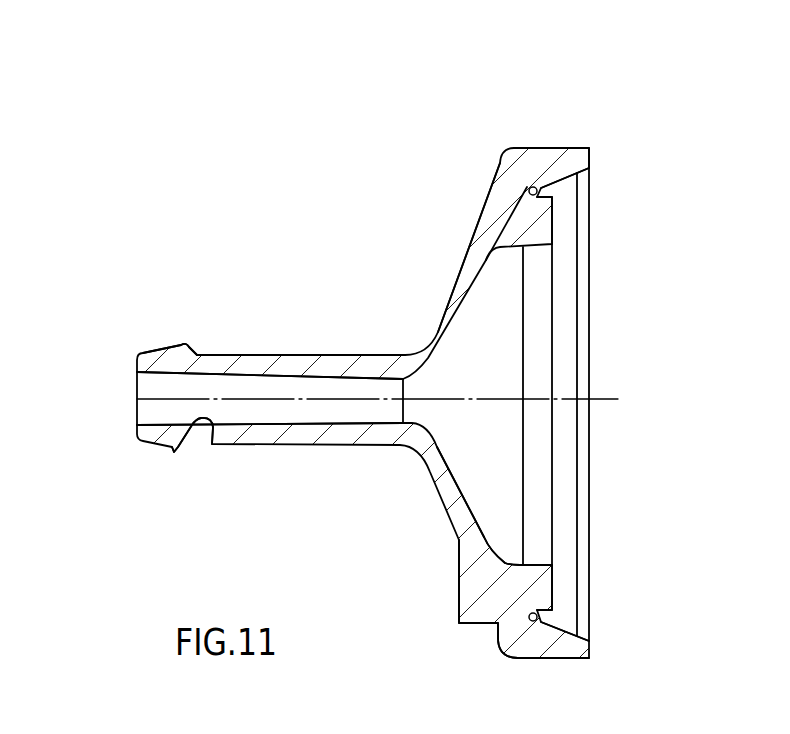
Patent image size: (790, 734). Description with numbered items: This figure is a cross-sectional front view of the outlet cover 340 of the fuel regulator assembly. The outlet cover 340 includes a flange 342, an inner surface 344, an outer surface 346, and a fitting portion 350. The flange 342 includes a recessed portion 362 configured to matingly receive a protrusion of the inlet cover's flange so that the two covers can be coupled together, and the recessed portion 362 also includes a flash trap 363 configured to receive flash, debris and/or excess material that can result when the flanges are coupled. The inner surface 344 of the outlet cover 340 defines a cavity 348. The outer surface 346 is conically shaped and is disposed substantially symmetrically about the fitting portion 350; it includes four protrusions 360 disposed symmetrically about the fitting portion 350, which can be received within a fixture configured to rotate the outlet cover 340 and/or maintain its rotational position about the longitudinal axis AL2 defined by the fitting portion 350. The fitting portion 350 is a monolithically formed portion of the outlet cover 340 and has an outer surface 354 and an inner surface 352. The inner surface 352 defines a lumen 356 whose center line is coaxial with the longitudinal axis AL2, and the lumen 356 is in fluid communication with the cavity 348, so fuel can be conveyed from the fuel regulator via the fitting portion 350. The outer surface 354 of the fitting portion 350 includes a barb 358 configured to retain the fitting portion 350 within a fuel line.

The outlet cover 340 is at (271, 192).
The flange 342 is at (568, 156).
The inner surface 344 is at (470, 524).
The outer surface 346 is at (466, 248).
The cavity 348 is at (503, 322).
The fitting portion 350 is at (287, 353).
The inner surface 352 is at (174, 447).
The outer surface 354 is at (308, 353).
The lumen 356 is at (158, 385).
The barb 358 is at (183, 347).
The protrusions 360 is at (459, 601).
The recessed portion 362 is at (553, 187).
The flash trap 363 is at (535, 187).
The longitudinal axis AL2 is at (277, 400).